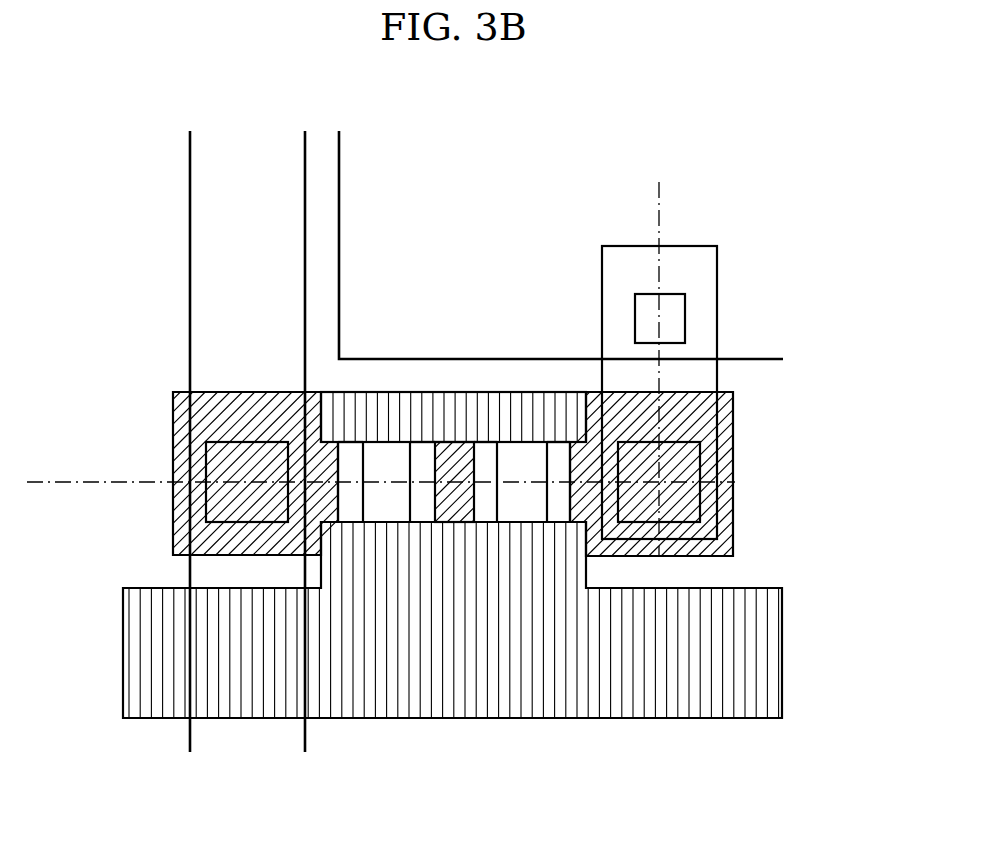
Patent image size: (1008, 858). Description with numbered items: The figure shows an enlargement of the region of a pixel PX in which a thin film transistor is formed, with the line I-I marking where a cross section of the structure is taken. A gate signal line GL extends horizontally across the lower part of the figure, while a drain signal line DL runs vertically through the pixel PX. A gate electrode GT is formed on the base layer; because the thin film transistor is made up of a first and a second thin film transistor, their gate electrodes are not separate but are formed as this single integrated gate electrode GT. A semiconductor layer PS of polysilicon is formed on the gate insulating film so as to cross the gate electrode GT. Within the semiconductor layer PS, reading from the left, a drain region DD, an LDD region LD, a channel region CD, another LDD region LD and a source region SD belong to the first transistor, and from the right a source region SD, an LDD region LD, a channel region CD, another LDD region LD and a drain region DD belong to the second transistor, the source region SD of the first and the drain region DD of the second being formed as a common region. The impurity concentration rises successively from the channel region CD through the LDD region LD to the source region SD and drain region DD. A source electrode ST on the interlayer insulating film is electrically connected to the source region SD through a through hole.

The drain signal line DL is at (247, 239).
The pixel PX is at (323, 197).
The gate electrode GT is at (451, 417).
The LDD region LD is at (454, 369).
The source electrode ST is at (717, 375).
The semiconductor layer PS is at (172, 407).
The source region SD is at (723, 507).
The drain region DD is at (246, 538).
The gate signal line GL is at (740, 654).
The channel region CD is at (382, 497).
The line I- I is at (662, 192).